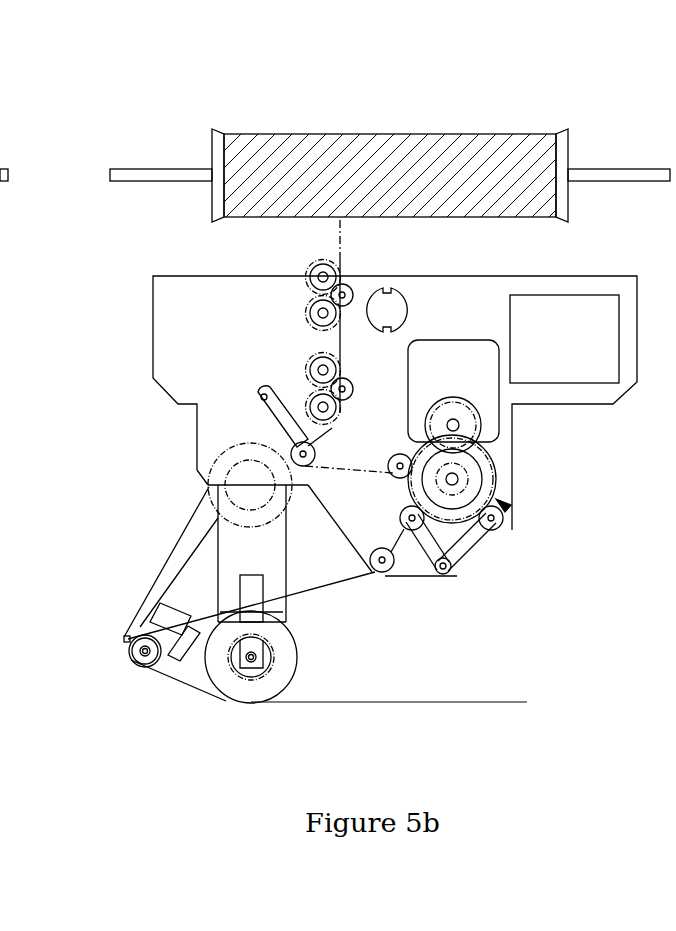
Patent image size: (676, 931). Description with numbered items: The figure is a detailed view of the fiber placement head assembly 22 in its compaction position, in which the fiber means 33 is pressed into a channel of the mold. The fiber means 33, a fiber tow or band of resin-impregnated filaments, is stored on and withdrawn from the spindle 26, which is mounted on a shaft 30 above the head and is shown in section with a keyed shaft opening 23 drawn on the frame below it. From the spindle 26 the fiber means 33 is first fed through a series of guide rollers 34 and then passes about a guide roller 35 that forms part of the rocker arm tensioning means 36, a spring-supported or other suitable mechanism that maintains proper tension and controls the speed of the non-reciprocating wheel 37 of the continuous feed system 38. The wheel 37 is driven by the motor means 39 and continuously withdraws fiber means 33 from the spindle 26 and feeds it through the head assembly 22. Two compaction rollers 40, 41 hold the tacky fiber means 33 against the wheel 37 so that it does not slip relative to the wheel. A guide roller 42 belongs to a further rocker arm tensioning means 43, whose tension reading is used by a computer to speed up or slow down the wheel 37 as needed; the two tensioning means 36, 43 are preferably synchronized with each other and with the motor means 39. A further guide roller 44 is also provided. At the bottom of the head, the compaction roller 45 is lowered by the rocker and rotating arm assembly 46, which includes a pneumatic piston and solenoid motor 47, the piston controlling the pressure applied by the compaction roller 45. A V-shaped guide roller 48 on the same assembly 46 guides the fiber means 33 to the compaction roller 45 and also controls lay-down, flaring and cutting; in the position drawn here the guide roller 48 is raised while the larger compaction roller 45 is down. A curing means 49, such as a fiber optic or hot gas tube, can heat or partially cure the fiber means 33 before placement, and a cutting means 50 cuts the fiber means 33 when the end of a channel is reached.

The fiber placement head assembly 22 is at (204, 352).
The keyed shaft opening 23 is at (400, 305).
The spindle 26 is at (302, 134).
The roll shaft 30 is at (159, 170).
The fiber means 33 is at (342, 254).
The guide rollers 34 is at (308, 298).
The guide roller 35 is at (312, 452).
The rocker arm tensioning means 36 is at (265, 413).
The non-reciprocating wheel 37 is at (483, 484).
The continuous feed system 38 is at (551, 520).
The motor means 39 is at (463, 383).
The compaction roller 40 is at (393, 455).
The compaction roller 41 is at (498, 523).
The guide roller 42 is at (400, 511).
The further rocker arm tensioning means 43 is at (423, 540).
The further guide roller 44 is at (380, 575).
The compaction roller 45 is at (296, 665).
The rocker and rotating arm assembly 46 is at (280, 612).
The pneumatic piston and solenoid motor 47 is at (286, 575).
The guide roller 48 is at (132, 664).
The curing means 49 is at (152, 598).
The cutting means 50 is at (175, 662).